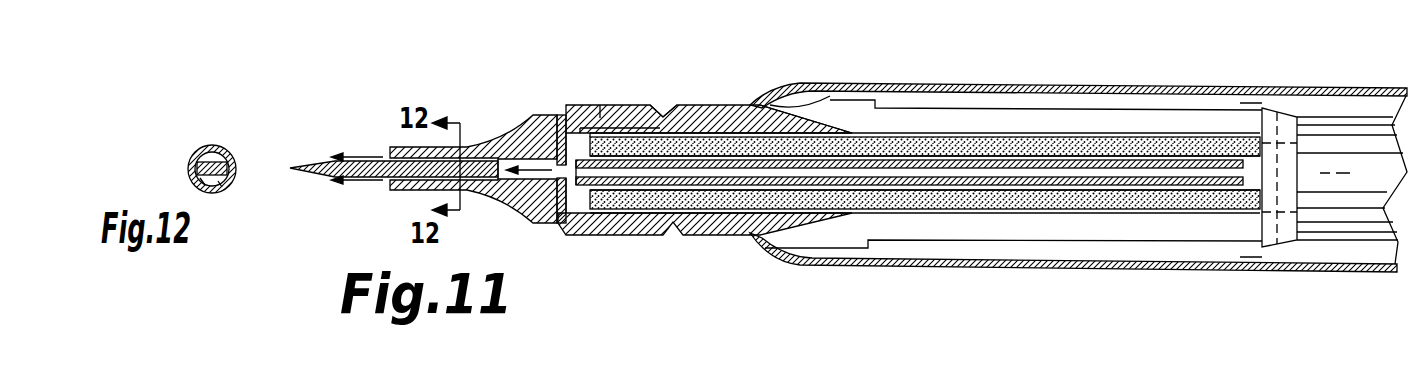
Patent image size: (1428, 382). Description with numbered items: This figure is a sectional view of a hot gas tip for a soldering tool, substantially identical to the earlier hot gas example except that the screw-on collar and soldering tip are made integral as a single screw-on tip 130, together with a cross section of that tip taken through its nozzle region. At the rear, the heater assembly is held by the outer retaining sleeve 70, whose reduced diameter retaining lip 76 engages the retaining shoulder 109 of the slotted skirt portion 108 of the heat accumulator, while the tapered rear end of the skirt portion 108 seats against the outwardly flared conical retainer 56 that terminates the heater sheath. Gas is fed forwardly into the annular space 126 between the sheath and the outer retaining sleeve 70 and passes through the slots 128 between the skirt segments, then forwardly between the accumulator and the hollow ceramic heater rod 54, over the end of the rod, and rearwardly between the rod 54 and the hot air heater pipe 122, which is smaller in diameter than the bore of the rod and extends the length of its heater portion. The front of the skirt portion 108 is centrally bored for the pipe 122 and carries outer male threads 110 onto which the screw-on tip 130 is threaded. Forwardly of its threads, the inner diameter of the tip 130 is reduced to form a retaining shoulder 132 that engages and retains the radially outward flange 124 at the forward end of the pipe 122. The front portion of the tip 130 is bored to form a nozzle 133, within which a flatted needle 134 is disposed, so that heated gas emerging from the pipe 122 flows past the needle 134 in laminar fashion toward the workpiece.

In FIG. 12, the screw-on tip 130 is at (231, 153).
In FIG. 11, the screw-on tip 130 is at (512, 108).
In FIG. 12, the flatted needle 134 is at (227, 181).
In FIG. 11, the flatted needle 134 is at (422, 178).
In FIG. 11, the nozzle 133 is at (507, 172).
In FIG. 11, the retaining shoulder 132 is at (578, 105).
In FIG. 11, the flange 124 is at (560, 224).
In FIG. 11, the male threads 110 is at (658, 85).
In FIG. 11, the hot air heater pipe 122 is at (702, 157).
In FIG. 11, the hollow ceramic heater rod 54 is at (913, 140).
In FIG. 11, the outer retaining sleeve 70 is at (987, 84).
In FIG. 11, the retaining shoulder 109 is at (835, 93).
In FIG. 11, the retaining lip 76 is at (760, 98).
In FIG. 11, the slots 128 is at (1153, 108).
In FIG. 11, the slotted skirt portion 108 is at (1018, 100).
In FIG. 11, the conical retainer 56 is at (1277, 113).
In FIG. 11, the annular space 126 is at (1316, 247).